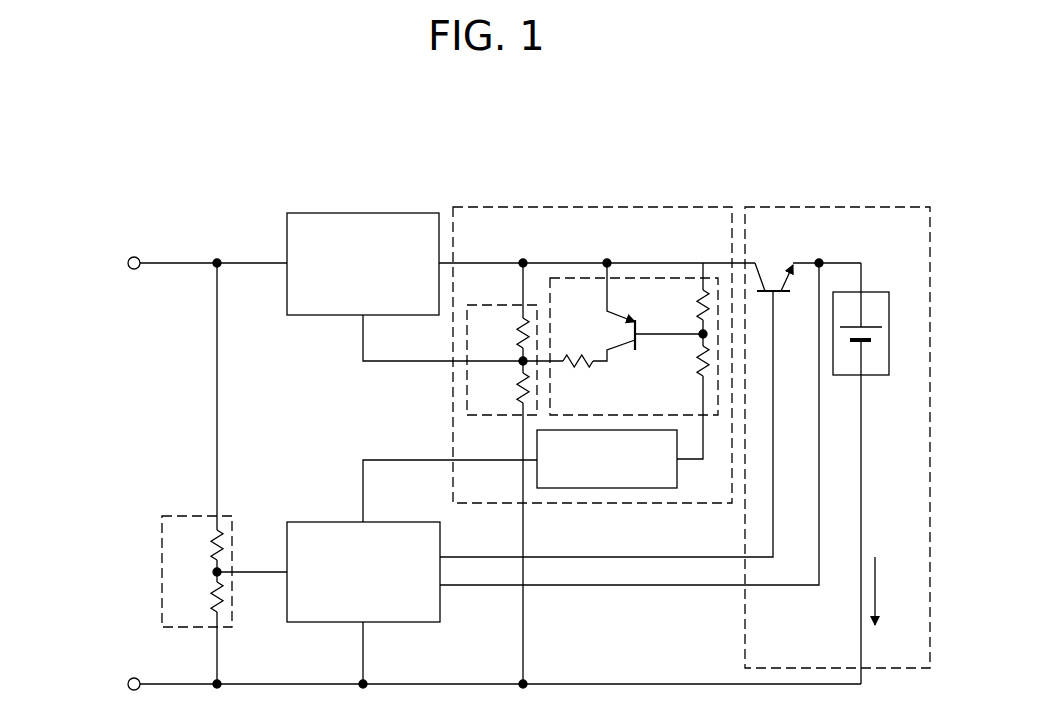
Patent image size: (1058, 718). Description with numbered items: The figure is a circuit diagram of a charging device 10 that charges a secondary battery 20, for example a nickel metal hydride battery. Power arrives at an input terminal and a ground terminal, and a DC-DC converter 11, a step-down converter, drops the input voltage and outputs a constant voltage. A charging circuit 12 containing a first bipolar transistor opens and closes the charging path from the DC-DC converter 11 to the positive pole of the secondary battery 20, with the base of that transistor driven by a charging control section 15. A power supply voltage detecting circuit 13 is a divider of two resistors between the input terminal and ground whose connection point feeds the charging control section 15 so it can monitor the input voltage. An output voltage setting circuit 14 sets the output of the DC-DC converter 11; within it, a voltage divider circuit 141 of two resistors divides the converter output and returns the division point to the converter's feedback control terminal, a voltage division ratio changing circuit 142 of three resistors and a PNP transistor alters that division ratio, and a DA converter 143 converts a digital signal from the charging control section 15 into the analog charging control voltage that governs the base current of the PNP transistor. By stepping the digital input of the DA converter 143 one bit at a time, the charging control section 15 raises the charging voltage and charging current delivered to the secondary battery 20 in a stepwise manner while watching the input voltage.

The charging device 10 is at (699, 168).
The DC-DC converter 11 is at (318, 213).
The charging circuit 12 is at (790, 207).
The power supply voltage detecting circuit 13 is at (178, 516).
The output voltage setting circuit 14 is at (492, 207).
The voltage divider circuit 141 is at (494, 305).
The voltage division ratio changing circuit 142 is at (570, 278).
The DA converter 143 is at (537, 445).
The charging control section 15 is at (307, 522).
The secondary battery 20 is at (889, 307).